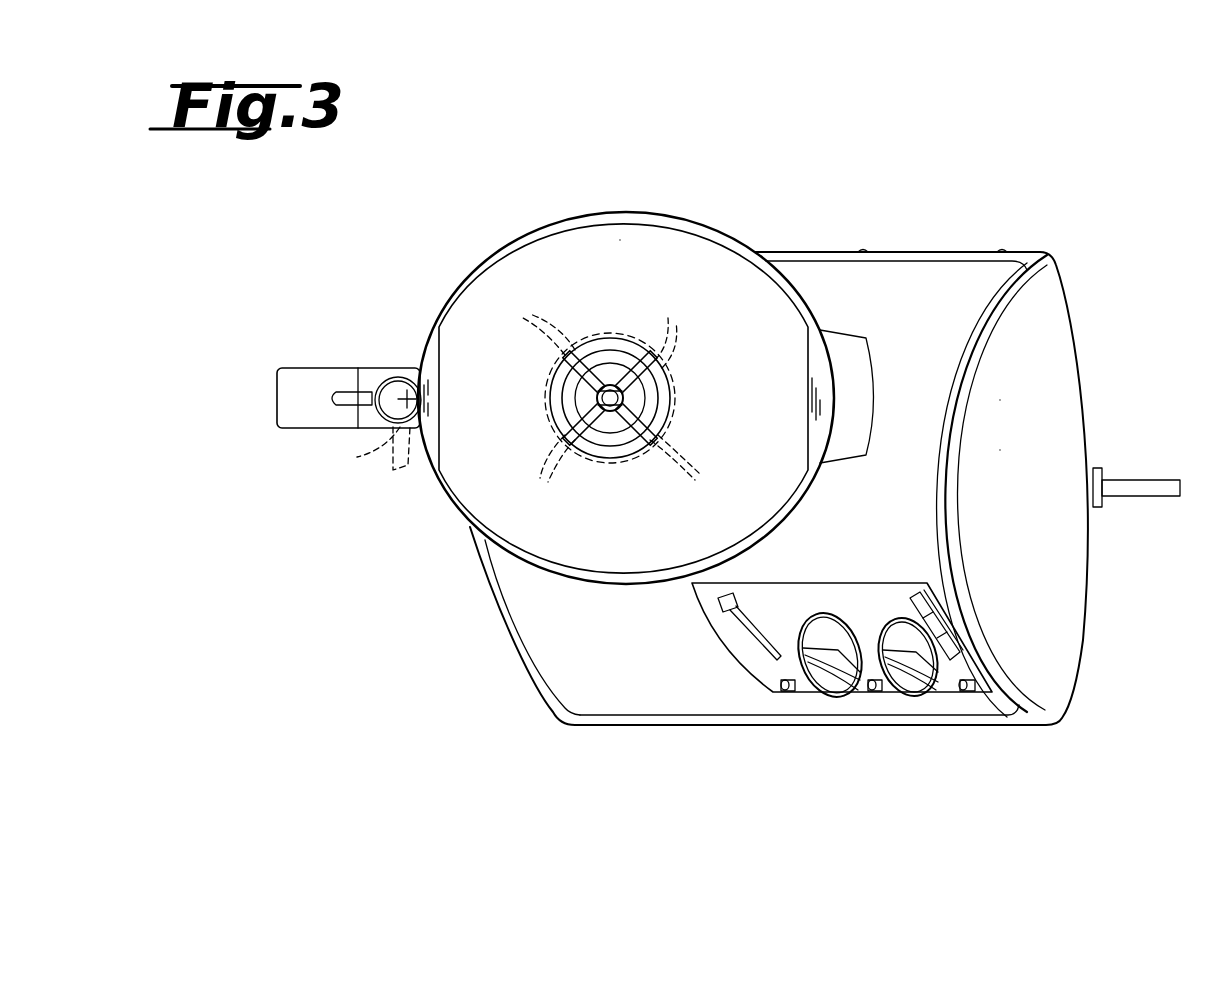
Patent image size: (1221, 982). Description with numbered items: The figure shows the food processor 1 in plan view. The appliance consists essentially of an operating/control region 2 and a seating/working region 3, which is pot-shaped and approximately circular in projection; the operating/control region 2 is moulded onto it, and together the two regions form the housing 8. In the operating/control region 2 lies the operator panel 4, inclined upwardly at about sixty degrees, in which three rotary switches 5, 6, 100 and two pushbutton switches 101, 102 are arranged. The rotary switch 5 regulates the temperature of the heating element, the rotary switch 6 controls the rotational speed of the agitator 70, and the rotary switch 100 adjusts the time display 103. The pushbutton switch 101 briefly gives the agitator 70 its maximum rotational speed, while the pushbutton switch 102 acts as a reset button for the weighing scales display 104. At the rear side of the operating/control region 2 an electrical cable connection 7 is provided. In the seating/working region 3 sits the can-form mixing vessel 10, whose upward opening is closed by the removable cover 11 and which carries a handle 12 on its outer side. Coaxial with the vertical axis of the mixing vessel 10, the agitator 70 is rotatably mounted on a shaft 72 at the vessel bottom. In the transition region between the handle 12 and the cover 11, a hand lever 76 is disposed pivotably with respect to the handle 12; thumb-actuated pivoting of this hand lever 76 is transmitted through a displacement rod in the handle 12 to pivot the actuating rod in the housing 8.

The food processor 1 is at (1075, 214).
The operating/control region 2 is at (1065, 360).
The seating/working region 3 is at (505, 568).
The operator panel 4 is at (890, 557).
The rotary switch 5 is at (918, 696).
The rotary switch 6 is at (833, 698).
The electrical cable connection 7 is at (1120, 485).
The housing 8 is at (712, 690).
The mixing vessel 10 is at (748, 238).
The cover 11 is at (679, 236).
The handle 12 is at (293, 400).
The agitator 70 is at (598, 378).
The shaft 72 is at (590, 385).
The hand lever 76 is at (358, 402).
The rotary switch 100 is at (970, 693).
The pushbutton switch 101 is at (875, 694).
The pushbutton switch 102 is at (785, 692).
The time display 103 is at (943, 618).
The weighing scales display 104 is at (722, 630).